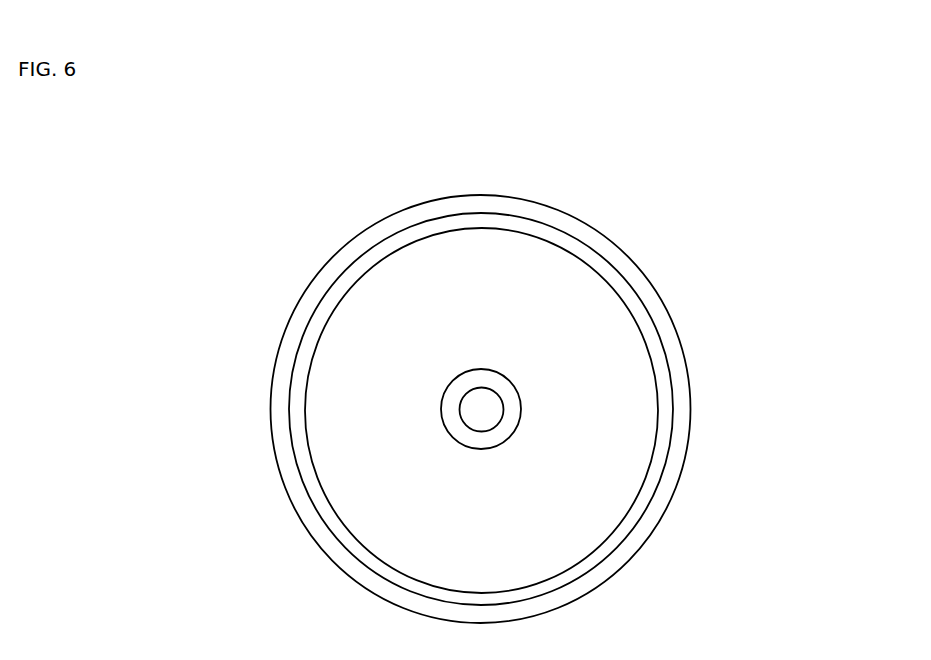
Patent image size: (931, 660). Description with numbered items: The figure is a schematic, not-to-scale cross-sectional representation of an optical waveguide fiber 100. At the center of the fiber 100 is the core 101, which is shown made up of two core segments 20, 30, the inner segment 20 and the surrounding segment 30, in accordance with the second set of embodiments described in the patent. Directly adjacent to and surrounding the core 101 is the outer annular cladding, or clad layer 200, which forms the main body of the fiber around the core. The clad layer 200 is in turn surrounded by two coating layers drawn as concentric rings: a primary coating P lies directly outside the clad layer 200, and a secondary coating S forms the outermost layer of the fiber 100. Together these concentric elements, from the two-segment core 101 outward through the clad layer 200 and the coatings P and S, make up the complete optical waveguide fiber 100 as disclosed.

The optical waveguide fiber 100 is at (243, 267).
The core 101 is at (535, 397).
The core segment 20 is at (477, 420).
The core segment 30 is at (510, 422).
The secondary coating S is at (607, 250).
The primary coating P is at (625, 288).
The clad layer 200 is at (607, 398).